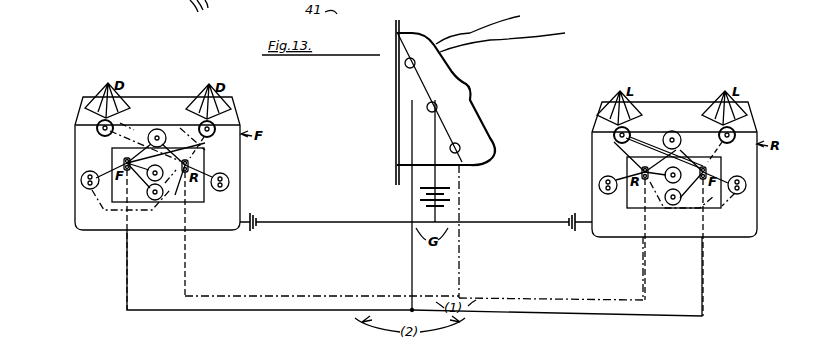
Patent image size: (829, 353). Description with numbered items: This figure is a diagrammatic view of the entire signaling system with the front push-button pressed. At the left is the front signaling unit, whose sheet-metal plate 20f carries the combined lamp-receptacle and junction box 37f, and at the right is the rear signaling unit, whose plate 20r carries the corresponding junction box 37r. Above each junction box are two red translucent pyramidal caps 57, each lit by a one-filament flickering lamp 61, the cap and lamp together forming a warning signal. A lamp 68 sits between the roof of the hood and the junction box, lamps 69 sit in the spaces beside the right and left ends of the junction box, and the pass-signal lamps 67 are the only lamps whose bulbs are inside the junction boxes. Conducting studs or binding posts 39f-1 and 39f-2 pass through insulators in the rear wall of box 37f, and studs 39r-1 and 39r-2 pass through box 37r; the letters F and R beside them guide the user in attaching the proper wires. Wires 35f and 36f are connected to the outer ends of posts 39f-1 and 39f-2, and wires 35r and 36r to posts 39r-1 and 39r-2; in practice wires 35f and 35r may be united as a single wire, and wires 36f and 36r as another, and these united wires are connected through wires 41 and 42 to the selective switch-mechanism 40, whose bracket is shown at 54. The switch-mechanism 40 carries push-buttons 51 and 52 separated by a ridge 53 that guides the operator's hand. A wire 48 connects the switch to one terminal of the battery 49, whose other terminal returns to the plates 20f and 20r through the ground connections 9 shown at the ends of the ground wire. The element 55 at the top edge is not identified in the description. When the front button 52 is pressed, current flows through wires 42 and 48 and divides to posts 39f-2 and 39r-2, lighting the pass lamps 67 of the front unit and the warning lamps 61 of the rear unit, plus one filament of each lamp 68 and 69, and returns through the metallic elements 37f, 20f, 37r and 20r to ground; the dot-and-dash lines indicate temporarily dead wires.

The partial element 55 is at (198, 14).
The front metal plate 20f is at (242, 194).
The rear metal plate 20r is at (596, 205).
The translucent cap 57 is at (185, 92).
The one-filament lamp 61 is at (99, 134).
The lamp 68 is at (154, 130).
The front junction box 37f is at (196, 202).
The rear junction box 37r is at (716, 207).
The pass-signal lamp 67 is at (148, 182).
The lamp 69 is at (81, 181).
The terminal connection 39f-1 is at (190, 166).
The terminal connection 39f-2 is at (115, 156).
The terminal connection 39r-1 is at (645, 180).
The terminal connection 39r-2 is at (708, 170).
The ground 9 is at (414, 230).
The wire 35f is at (242, 294).
The wire 35r is at (630, 285).
The wire 36f is at (168, 308).
The wire 36r is at (700, 315).
The wire 41 is at (462, 268).
The wire 42 is at (410, 268).
The bracket 54 is at (395, 130).
The selective switch-mechanism 40 is at (479, 105).
The push-button 52 is at (444, 56).
The ridge 53 is at (466, 82).
The push-button 51 is at (488, 130).
The wire 48 is at (434, 148).
The battery 49 is at (452, 182).